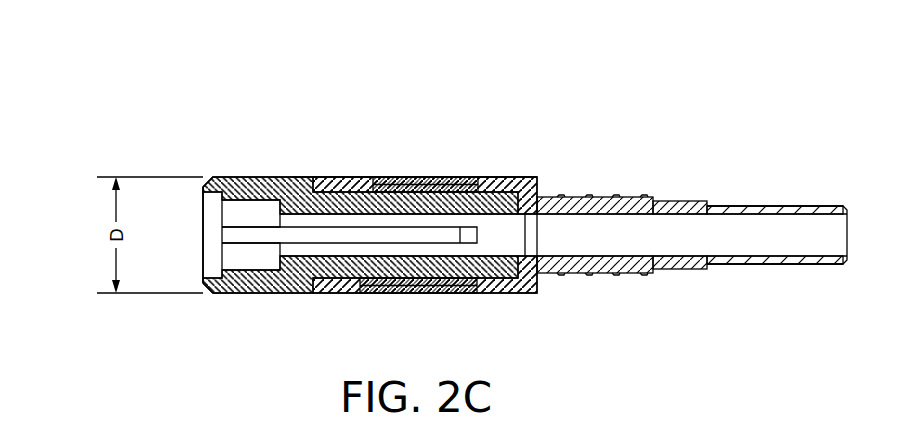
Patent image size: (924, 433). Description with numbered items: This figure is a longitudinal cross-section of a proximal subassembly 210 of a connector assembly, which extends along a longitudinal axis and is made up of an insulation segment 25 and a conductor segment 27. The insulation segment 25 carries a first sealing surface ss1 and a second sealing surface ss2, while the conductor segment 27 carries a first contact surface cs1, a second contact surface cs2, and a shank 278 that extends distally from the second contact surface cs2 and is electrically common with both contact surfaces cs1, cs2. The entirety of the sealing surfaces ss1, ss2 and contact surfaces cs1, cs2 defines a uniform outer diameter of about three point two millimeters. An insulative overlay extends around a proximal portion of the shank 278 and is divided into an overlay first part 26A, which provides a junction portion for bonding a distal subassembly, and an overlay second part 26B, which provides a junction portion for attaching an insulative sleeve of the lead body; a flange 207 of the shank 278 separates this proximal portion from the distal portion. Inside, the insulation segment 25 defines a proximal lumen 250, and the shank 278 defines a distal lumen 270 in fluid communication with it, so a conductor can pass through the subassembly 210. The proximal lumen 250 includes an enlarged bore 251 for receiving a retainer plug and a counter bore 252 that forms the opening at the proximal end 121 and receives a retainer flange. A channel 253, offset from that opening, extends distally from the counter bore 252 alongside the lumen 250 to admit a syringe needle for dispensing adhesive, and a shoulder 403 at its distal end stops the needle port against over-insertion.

The proximal subassembly 210 is at (245, 67).
The proximal end 121 is at (207, 145).
The proximal lumen 250 is at (233, 214).
The counter bore 252 is at (216, 276).
The enlarged bore 251 is at (268, 268).
The channel 253 is at (296, 237).
The shoulder 403 is at (470, 229).
The conductor segment 27 is at (712, 272).
The insulation segment 25 is at (380, 177).
The first sealing surface ss1 is at (249, 162).
The first contact surface cs1 is at (329, 162).
The second sealing surface ss2 is at (405, 162).
The second contact surface cs2 is at (509, 162).
The overlay first part 26A is at (598, 197).
The overlay second part 26B is at (678, 201).
The flange 207 is at (705, 204).
The shank 278 is at (753, 180).
The distal lumen 270 is at (833, 235).